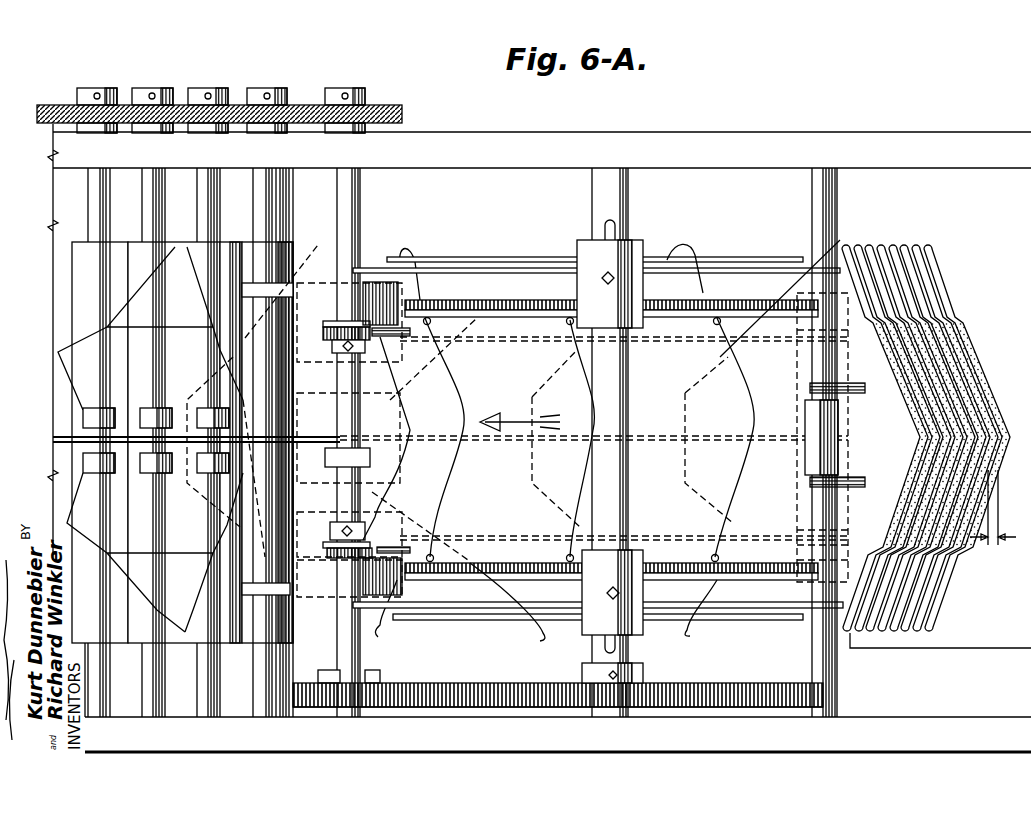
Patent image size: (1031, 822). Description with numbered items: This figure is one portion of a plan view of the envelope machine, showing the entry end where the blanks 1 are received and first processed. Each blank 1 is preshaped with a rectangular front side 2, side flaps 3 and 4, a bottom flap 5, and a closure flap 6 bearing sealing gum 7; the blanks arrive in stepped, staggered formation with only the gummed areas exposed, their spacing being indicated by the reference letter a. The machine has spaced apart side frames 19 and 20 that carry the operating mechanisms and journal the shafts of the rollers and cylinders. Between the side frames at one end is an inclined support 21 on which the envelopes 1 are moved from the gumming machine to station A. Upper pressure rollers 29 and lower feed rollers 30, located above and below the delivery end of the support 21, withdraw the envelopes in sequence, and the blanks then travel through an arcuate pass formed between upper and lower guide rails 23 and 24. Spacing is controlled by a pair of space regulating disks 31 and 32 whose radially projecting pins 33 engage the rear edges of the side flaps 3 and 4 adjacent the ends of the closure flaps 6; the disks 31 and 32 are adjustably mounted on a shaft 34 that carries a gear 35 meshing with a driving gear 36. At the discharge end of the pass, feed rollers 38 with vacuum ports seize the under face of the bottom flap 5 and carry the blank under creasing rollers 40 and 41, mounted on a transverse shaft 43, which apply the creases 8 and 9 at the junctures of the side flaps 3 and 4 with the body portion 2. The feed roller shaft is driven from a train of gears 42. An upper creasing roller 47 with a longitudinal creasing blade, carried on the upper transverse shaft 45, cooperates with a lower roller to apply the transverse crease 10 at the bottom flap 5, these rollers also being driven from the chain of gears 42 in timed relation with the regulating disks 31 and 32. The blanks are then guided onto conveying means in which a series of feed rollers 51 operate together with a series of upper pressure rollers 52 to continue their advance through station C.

The blank 1 is at (952, 558).
The front side 2 is at (783, 398).
The side flap 3 is at (180, 247).
The side flap 4 is at (182, 632).
The bottom flap 5 is at (60, 349).
The closure flap 6 is at (238, 407).
The sealing gum 7 is at (953, 334).
The crease 8 is at (163, 327).
The crease 9 is at (177, 553).
The transverse crease 10 is at (110, 523).
The side frame 19 is at (697, 134).
The side frame 20 is at (642, 737).
The inclined support 21 is at (1002, 648).
The upper guide rail 23 is at (772, 251).
The lower guide rail 24 is at (727, 260).
The upper pressure roller 29 is at (837, 456).
The lower feed roller 30 is at (848, 516).
The space regulating disk 31 is at (695, 327).
The space regulating disk 32 is at (683, 560).
The pin 33 is at (728, 327).
The shaft 34 is at (630, 427).
The gear 35 is at (743, 705).
The driving gear 36 is at (395, 683).
The feed roller 38 is at (410, 418).
The creasing roller 40 is at (377, 337).
The creasing roller 41 is at (340, 547).
The train of gears 42 is at (365, 108).
The transverse shaft 43 is at (362, 229).
The upper transverse shaft 45 is at (272, 223).
The upper creasing roller 47 is at (293, 313).
The feed roller 51 is at (78, 262).
The upper pressure roller 52 is at (110, 408).
The spacing a is at (993, 507).